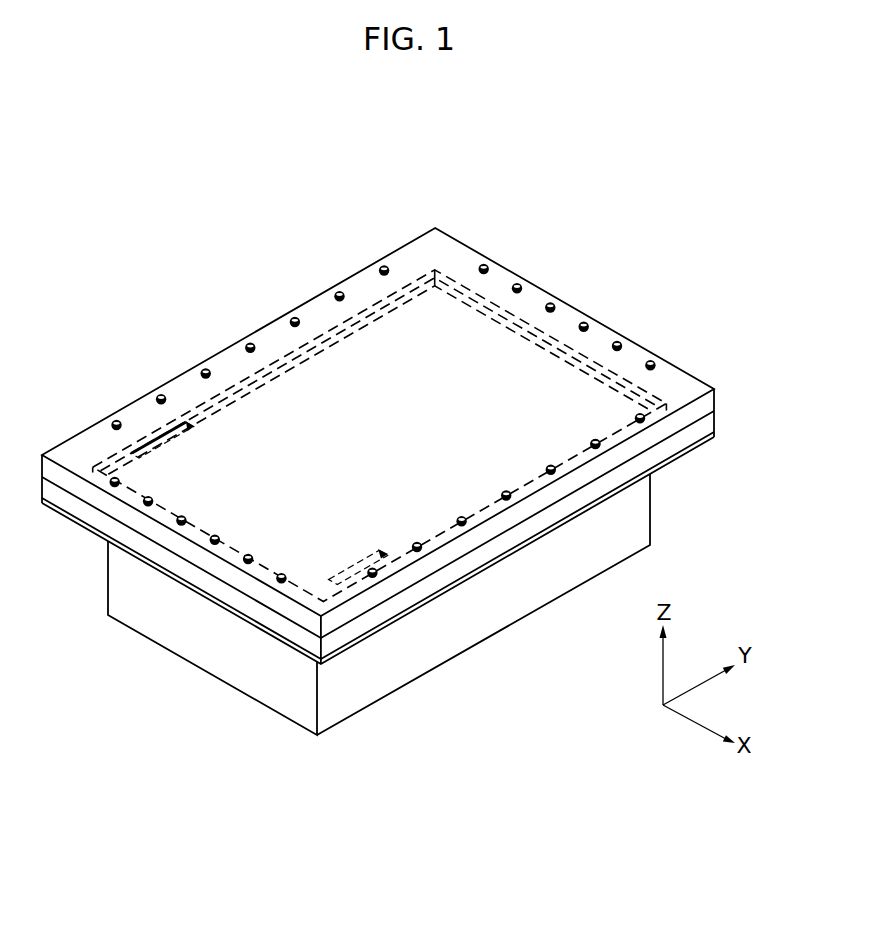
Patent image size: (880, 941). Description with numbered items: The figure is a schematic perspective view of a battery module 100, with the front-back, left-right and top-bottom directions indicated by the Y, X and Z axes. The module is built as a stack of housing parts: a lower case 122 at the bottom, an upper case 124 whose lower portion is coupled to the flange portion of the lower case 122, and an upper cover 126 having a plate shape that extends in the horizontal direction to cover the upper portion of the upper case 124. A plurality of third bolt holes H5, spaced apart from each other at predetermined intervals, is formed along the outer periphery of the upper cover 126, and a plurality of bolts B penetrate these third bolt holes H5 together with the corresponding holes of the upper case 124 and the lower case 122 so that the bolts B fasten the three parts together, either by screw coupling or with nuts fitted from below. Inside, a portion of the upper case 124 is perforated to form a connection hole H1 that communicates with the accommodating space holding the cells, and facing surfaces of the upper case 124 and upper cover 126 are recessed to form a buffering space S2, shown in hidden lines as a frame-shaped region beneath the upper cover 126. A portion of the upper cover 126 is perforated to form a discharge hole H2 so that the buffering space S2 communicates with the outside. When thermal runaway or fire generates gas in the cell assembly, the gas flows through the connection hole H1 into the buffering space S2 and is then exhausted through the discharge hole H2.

The battery module 100 is at (178, 216).
The upper cover 126 is at (716, 400).
The upper case 124 is at (716, 420).
The lower case 122 is at (650, 508).
The buffering space S2 is at (393, 402).
The discharge hole H2 is at (155, 432).
The connection hole H1 is at (355, 568).
The third bolt holes H5 is at (597, 446).
The bolts B is at (618, 342).